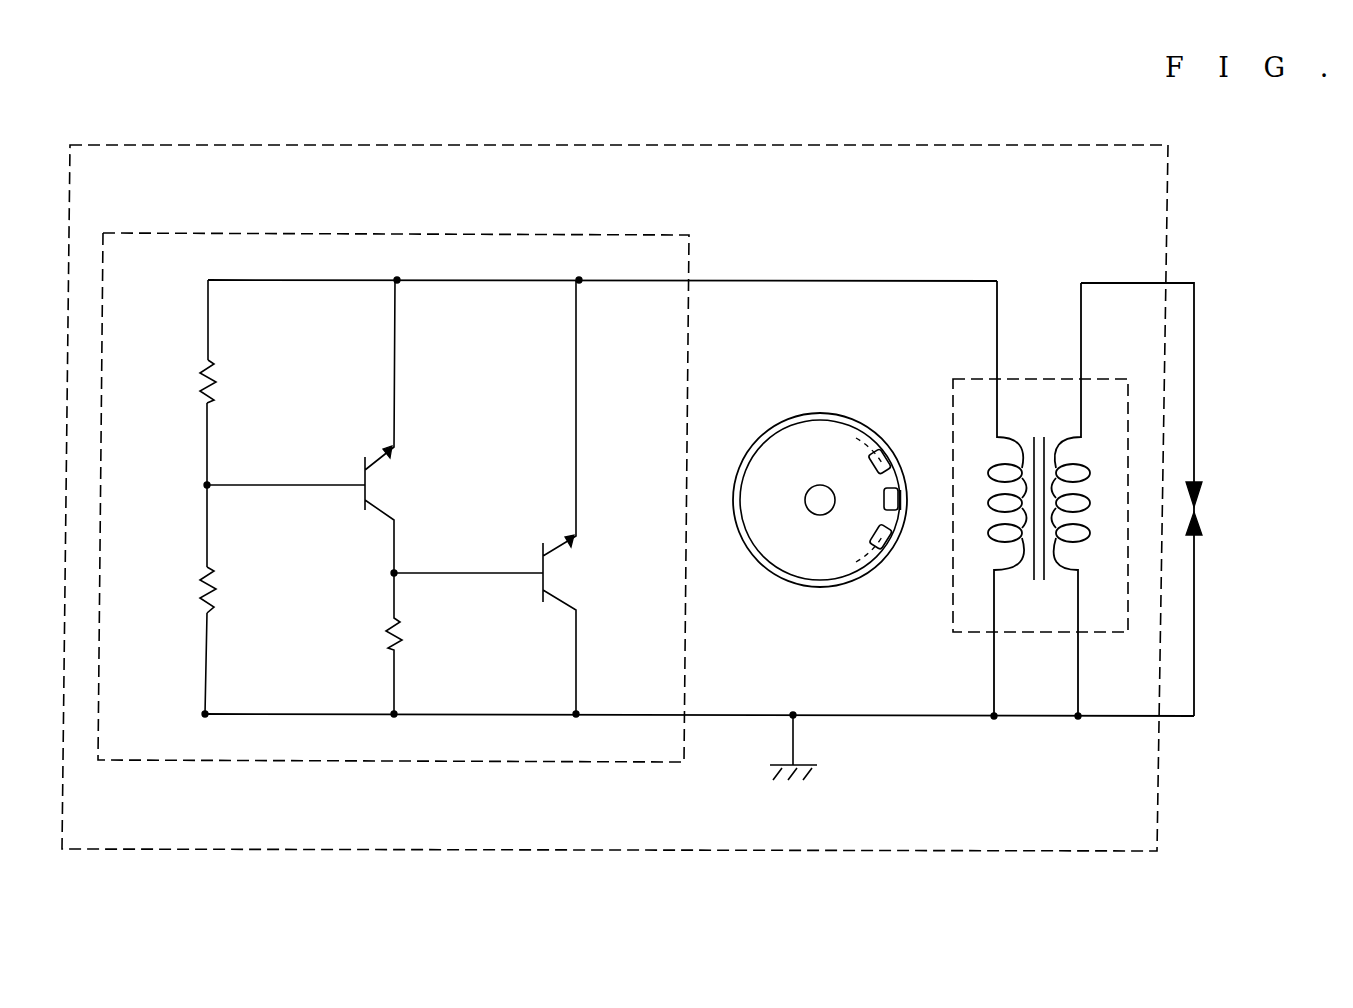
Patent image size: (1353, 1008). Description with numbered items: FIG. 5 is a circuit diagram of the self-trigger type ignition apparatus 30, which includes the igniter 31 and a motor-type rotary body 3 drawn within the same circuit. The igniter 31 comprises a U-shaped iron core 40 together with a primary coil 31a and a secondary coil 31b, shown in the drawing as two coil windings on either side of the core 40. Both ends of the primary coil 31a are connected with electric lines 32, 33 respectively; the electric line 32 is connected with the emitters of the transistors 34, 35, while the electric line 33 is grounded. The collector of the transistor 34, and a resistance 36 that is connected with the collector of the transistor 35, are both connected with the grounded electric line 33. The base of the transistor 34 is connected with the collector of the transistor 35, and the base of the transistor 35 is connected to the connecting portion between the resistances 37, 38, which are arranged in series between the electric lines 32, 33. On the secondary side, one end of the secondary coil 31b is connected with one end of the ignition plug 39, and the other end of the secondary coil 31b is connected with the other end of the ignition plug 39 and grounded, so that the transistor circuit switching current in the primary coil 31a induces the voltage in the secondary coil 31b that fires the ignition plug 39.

The motor 3 is at (840, 412).
The self-trigger type ignition apparatus 30 is at (583, 145).
The igniter 31 is at (1025, 498).
The primary coil 31a is at (997, 540).
The secondary coil 31b is at (1080, 540).
The electric line 32 is at (725, 280).
The electric line 33 is at (715, 720).
The transistor 34 is at (540, 548).
The transistor 35 is at (362, 462).
The resistance 36 is at (392, 630).
The resistance 37 is at (205, 370).
The resistance 38 is at (207, 583).
The ignition plug 39 is at (1208, 505).
The U-shaped iron core 40 is at (1038, 430).